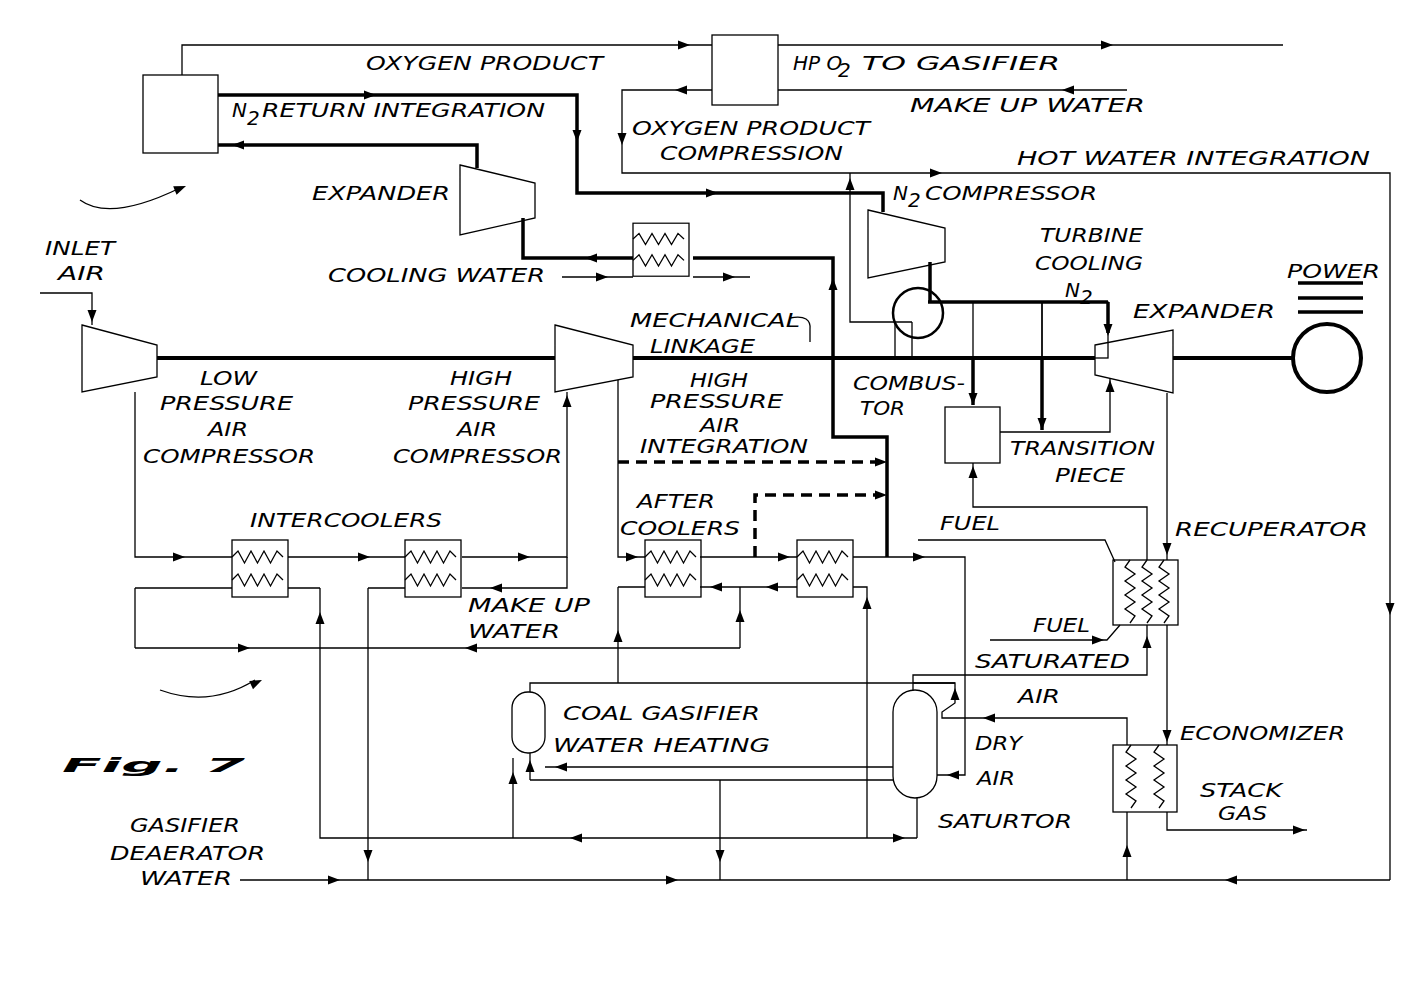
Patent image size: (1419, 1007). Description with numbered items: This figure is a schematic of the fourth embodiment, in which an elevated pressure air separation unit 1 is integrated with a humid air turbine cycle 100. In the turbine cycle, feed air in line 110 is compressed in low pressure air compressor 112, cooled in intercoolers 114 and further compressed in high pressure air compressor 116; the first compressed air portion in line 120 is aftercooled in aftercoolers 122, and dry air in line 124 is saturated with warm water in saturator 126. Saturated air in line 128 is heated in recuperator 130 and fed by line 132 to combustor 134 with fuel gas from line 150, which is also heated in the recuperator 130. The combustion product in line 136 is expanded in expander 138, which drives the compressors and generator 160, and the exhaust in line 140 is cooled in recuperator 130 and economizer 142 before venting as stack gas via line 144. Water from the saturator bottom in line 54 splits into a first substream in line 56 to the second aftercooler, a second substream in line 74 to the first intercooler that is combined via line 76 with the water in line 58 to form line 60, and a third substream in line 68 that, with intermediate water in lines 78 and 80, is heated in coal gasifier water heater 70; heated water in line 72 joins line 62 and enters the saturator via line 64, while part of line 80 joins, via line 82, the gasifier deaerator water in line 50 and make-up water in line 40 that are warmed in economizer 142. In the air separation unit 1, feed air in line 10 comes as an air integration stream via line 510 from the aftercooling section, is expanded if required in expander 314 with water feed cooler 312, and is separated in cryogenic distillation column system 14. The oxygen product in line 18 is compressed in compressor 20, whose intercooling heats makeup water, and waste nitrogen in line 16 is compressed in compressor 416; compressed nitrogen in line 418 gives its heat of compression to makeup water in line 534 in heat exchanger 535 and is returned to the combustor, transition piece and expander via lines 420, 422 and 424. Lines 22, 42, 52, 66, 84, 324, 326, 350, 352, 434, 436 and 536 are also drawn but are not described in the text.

The air separation unit 1 is at (126, 195).
The feed air line 10 is at (302, 146).
The cryogenic distillation column system 14 is at (143, 117).
The nitrogen waste line 16 is at (260, 95).
The oxygen product line 18 is at (182, 58).
The oxygen product compressor 20 is at (760, 87).
The high pressure oxygen line to gasifier 22 is at (1265, 45).
The make-up water line 40 is at (522, 588).
The intercooler water line 42 is at (368, 740).
The gasifier deaerator water line 50 is at (308, 878).
The dry air line 52 is at (1038, 718).
The saturator bottom water line 54 is at (938, 843).
The first substream line 56 is at (864, 798).
The warmed water line 58 is at (794, 588).
The combined warmed water line 60 is at (733, 587).
The heated water line 62 is at (618, 660).
The saturator feed water line 64 is at (795, 683).
The water line 66 is at (840, 840).
The third substream line 68 is at (513, 810).
The coal gasifier water heater 70 is at (540, 740).
The heated water line 72 is at (583, 683).
The second substream line 74 is at (415, 837).
The intercooler warmed water line 76 is at (430, 652).
The intermediate water line 78 is at (798, 764).
The lower intermediate water line 80 is at (792, 810).
The water combining line 82 is at (720, 798).
The water line 84 is at (555, 782).
The integrated humid air turbine cycle 100 is at (201, 679).
The feed air line 110 is at (62, 300).
The low pressure air compressor 112 is at (130, 370).
The intercooler 114 is at (232, 538).
The high pressure air compressor 116 is at (605, 370).
The first compressed air portion line 120 is at (616, 413).
The aftercooler 122 is at (793, 578).
The dry air line 124 is at (965, 618).
The saturator 126 is at (930, 753).
The saturated air line 128 is at (1075, 680).
The recuperator 130 is at (1180, 612).
The heated saturated air line 132 is at (1023, 507).
The combustor 134 is at (985, 448).
The combustion product line 136 is at (1107, 415).
The expander 138 is at (1150, 368).
The exhaust gas line 140 is at (1168, 473).
The economizer 142 is at (1178, 778).
The stack gas line 144 is at (1188, 832).
The fuel gas line 150 is at (1007, 637).
The generator 160 is at (1345, 370).
The water feed cooler 312 is at (651, 240).
The expander 314 is at (505, 215).
The cooling water inlet line 324 is at (618, 277).
The cooling water outlet line 326 is at (707, 278).
The water line 350 is at (958, 879).
The water line to economizer 352 is at (1127, 865).
The nitrogen compressor 416 is at (918, 257).
The compressed nitrogen line 418 is at (930, 273).
The combustor nitrogen line 420 is at (1008, 354).
The transition piece nitrogen line 422 is at (1073, 354).
The expander cooling nitrogen line 424 is at (1110, 308).
The make up water line 434 is at (1093, 90).
The hot water integration line 436 is at (1187, 173).
The air integration line 510 is at (705, 463).
The makeup water line 534 is at (905, 346).
The heat exchanger 535 is at (935, 301).
The hot water line 536 is at (850, 240).